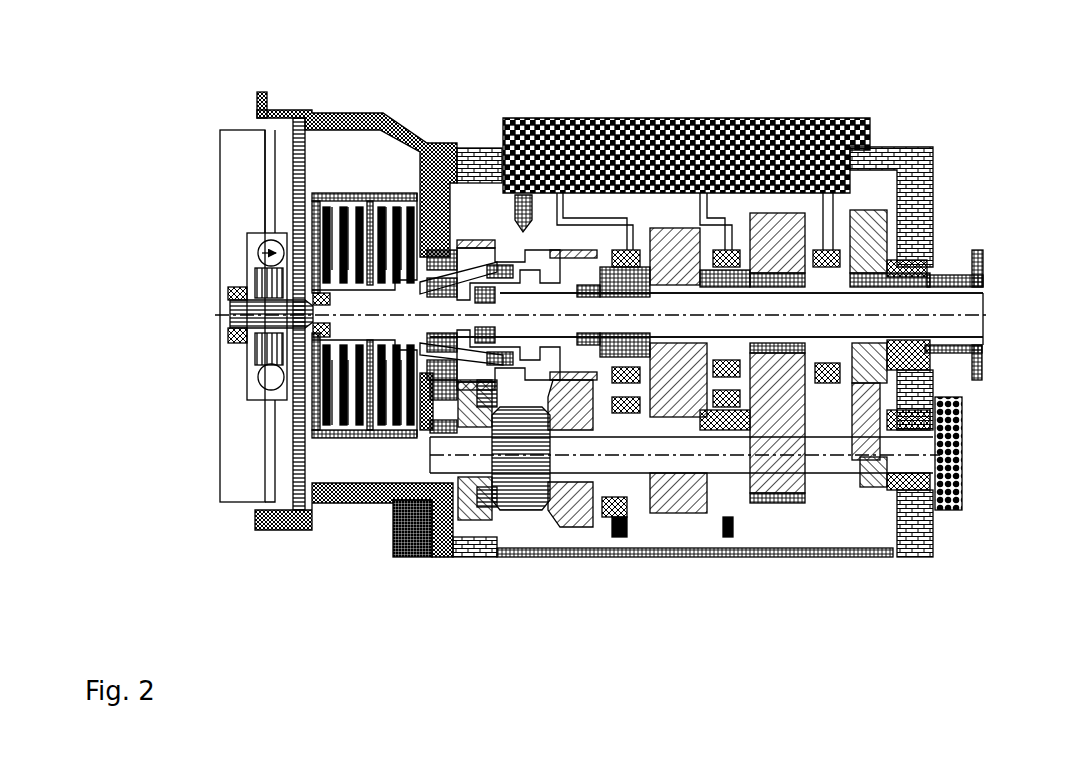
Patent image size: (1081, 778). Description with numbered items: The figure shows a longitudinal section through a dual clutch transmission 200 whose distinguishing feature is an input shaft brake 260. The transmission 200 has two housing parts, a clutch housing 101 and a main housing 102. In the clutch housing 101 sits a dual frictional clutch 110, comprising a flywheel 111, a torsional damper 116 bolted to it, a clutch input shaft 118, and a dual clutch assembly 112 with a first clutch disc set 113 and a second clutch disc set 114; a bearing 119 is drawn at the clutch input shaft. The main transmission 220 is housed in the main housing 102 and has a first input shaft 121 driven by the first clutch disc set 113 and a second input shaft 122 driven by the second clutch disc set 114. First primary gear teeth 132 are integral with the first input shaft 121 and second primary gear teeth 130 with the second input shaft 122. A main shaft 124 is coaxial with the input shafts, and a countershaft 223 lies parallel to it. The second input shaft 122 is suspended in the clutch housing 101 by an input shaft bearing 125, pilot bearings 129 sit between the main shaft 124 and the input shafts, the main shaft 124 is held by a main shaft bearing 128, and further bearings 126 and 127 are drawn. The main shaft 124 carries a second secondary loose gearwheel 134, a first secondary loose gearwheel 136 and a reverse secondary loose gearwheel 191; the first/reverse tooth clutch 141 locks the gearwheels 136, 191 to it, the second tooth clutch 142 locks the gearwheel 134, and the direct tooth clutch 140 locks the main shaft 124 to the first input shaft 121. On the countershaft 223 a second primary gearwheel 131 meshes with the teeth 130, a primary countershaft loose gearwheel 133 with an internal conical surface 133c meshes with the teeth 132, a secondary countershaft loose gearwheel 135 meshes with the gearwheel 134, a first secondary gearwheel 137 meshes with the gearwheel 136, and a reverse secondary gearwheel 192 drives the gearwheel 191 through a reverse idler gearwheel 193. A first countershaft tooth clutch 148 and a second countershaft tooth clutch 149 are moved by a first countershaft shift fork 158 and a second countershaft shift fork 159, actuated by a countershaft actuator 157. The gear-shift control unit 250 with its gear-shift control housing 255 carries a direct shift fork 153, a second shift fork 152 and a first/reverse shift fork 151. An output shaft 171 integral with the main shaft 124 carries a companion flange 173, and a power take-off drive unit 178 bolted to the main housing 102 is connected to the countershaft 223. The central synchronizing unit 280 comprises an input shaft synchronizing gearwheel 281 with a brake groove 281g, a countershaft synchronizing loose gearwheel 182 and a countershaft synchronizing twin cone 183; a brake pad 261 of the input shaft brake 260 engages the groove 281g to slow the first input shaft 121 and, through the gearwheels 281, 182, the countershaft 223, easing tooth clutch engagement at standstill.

The transmission 200 is at (295, 32).
The clutch housing 101 is at (378, 287).
The main housing 102 is at (878, 141).
The dual frictional clutch 110 is at (183, 175).
The flywheel 111 is at (220, 298).
The dual clutch assembly 112 is at (291, 214).
The first clutch disc set 113 is at (264, 245).
The second clutch disc set 114 is at (289, 227).
The torsional damper 116 is at (226, 316).
The clutch input shaft 118 is at (239, 305).
The bearing 119 is at (243, 324).
The first input shaft 121 is at (337, 472).
The second input shaft 122 is at (326, 497).
The main shaft 124 is at (651, 420).
The input shaft bearing 125 is at (363, 478).
The support 126 is at (402, 568).
The end wall 127 is at (957, 592).
The main shaft bearing 128 is at (966, 539).
The pilot bearings 129 is at (437, 607).
The second primary gear teeth 130 is at (412, 496).
The second primary gearwheel 131 is at (426, 520).
The first primary gear teeth 132 is at (612, 573).
The primary countershaft loose gearwheel 133 is at (585, 537).
The internal conical surface 133c is at (557, 584).
The second secondary loose gearwheel 134 is at (776, 431).
The secondary countershaft loose gearwheel 135 is at (688, 584).
The first secondary loose gearwheel 136 is at (805, 482).
The first secondary gearwheel 137 is at (841, 576).
The direct tooth clutch 140 is at (655, 502).
The first/reverse tooth clutch 141 is at (882, 411).
The second tooth clutch 142 is at (782, 412).
The first countershaft tooth clutch 148 is at (641, 472).
The second countershaft tooth clutch 149 is at (745, 552).
The first/reverse shift fork 151 is at (777, 144).
The second shift fork 152 is at (700, 144).
The direct shift fork 153 is at (595, 144).
The countershaft actuator 157 is at (353, 530).
The first countershaft shift fork 158 is at (833, 540).
The second countershaft shift fork 159 is at (889, 521).
The output shaft 171 is at (715, 222).
The companion flange 173 is at (971, 265).
The power take-off drive unit 178 is at (995, 453).
The countershaft synchronizing loose gearwheel 182 is at (487, 514).
The countershaft synchronizing twin cone 183 is at (498, 587).
The reverse secondary loose gearwheel 191 is at (933, 436).
The reverse secondary gearwheel 192 is at (925, 532).
The reverse idler gearwheel 193 is at (905, 535).
The main transmission 220 is at (614, 639).
The countershaft 223 is at (695, 621).
The gear-shift control unit 250 is at (576, 63).
The gear-shift control housing 255 is at (686, 110).
The input shaft brake 260 is at (475, 73).
The brake pad 261 is at (531, 147).
The central synchronizing unit 280 is at (517, 640).
The input shaft synchronizing gearwheel 281 is at (532, 511).
The brake groove 281g is at (481, 213).